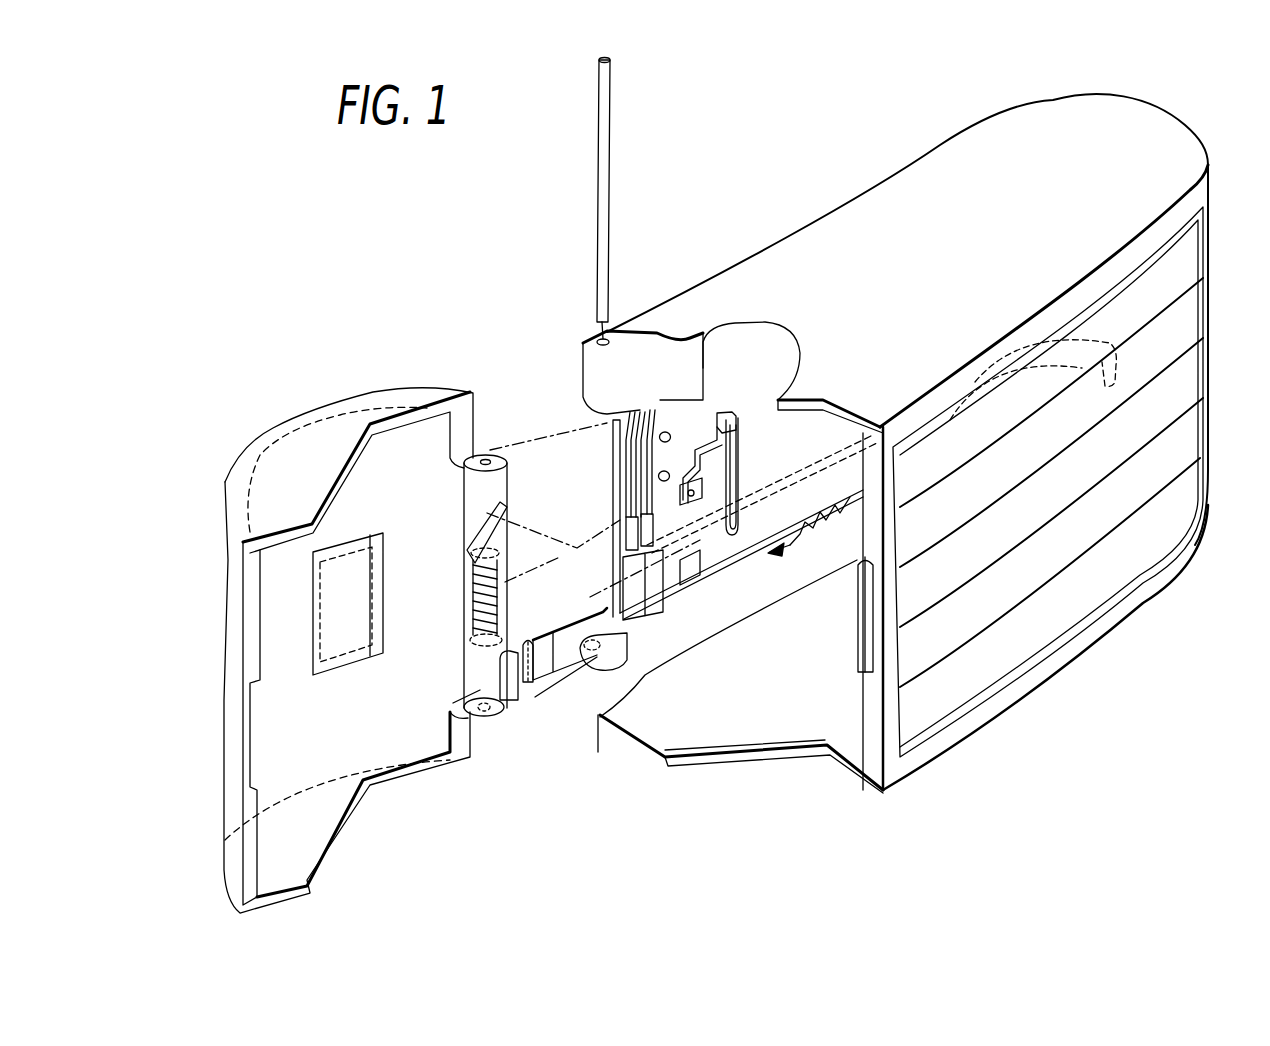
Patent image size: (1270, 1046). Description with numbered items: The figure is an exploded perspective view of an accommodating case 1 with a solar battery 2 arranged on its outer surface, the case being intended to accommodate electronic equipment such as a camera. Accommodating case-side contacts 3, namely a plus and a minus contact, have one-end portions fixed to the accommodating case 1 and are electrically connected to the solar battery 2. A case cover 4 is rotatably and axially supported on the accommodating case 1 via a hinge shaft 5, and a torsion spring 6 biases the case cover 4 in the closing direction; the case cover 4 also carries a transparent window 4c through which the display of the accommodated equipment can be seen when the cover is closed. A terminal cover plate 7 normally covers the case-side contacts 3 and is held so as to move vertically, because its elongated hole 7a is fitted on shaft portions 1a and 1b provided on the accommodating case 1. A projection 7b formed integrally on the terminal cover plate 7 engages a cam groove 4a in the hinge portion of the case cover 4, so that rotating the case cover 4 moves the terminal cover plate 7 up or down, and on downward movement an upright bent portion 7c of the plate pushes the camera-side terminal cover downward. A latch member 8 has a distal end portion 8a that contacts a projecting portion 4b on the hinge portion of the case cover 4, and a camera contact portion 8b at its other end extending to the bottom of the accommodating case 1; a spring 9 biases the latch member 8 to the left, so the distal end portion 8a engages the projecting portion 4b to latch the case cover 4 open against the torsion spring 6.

The accommodating case 1 is at (856, 212).
The shaft portion 1a is at (670, 423).
The shaft portion 1b is at (660, 480).
The solar battery 2 is at (1207, 383).
The accommodating case-side contacts 3 is at (640, 468).
The case cover 4 is at (322, 418).
The cam groove 4a is at (480, 522).
The projecting portion 4b is at (510, 687).
The transparent window 4c is at (343, 633).
The hinge shaft 5 is at (612, 107).
The torsion spring 6 is at (500, 603).
The terminal cover plate 7 is at (710, 468).
The elongated hole 7a is at (738, 465).
The projection 7b is at (693, 467).
The upright bent portion 7c is at (725, 415).
The latch member 8 is at (723, 553).
The distal end portion 8a is at (530, 683).
The camera contact portion 8b is at (1112, 357).
The spring 9 is at (810, 540).